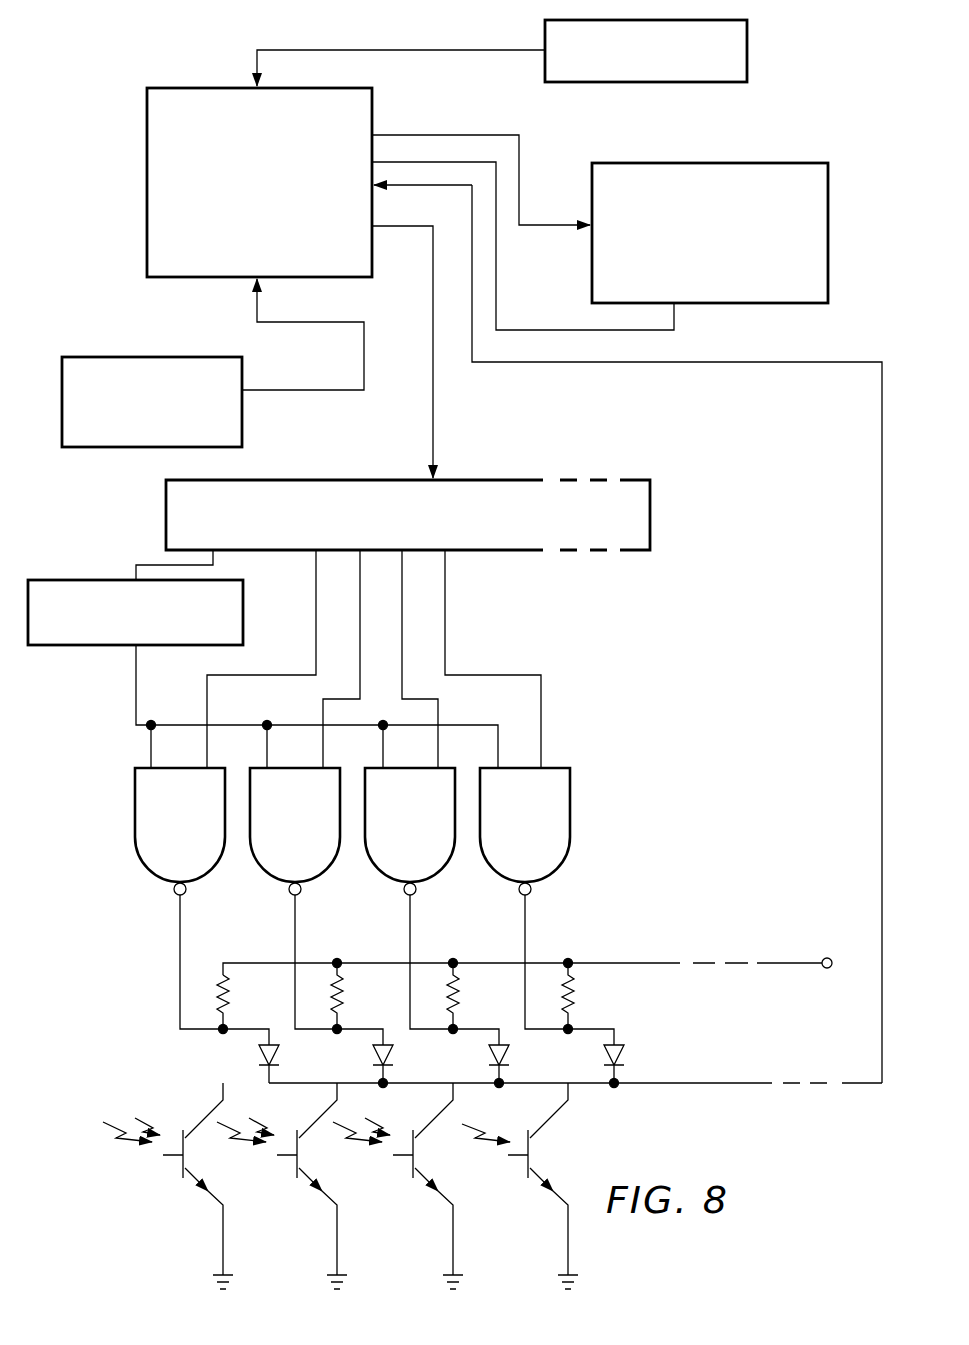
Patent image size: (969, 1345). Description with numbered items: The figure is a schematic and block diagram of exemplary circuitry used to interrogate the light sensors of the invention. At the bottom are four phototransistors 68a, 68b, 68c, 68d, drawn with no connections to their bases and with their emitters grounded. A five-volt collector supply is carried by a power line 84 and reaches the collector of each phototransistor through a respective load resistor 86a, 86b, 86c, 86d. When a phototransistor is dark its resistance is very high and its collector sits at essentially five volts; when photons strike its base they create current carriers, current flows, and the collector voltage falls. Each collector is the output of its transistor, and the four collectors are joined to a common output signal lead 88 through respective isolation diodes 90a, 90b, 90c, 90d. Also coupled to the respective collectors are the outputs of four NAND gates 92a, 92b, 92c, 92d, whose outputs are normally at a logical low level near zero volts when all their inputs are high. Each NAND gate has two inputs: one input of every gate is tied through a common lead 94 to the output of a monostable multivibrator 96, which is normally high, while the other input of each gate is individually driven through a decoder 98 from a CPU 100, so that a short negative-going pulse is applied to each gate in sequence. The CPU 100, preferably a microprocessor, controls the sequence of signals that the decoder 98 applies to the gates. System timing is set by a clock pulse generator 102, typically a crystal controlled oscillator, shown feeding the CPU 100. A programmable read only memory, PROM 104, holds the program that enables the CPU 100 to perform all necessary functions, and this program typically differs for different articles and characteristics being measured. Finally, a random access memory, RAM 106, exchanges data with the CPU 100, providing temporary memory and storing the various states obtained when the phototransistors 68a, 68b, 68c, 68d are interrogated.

The CPU 100 is at (373, 98).
The programmable read only memory (PROM) 104 is at (747, 34).
The random access memory (RAM) 106 is at (778, 163).
The clock pulse generator 102 is at (228, 357).
The decoder 98 is at (483, 478).
The monostable multivibrator 96 is at (233, 580).
The common lead 94 is at (136, 688).
The NAND gate 92a is at (138, 860).
The NAND gate 92b is at (256, 866).
The NAND gate 92c is at (373, 866).
The NAND gate 92d is at (492, 866).
The power line 84 is at (617, 961).
The load resistor 86a is at (229, 1006).
The load resistor 86b is at (343, 1006).
The load resistor 86c is at (459, 1006).
The load resistor 86d is at (574, 1006).
The isolation diode 90a is at (279, 1053).
The isolation diode 90b is at (393, 1053).
The isolation diode 90c is at (509, 1053).
The isolation diode 90d is at (624, 1053).
The output signal lead 88 is at (882, 1018).
The phototransistor 68a is at (181, 1168).
The phototransistor 68b is at (295, 1168).
The phototransistor 68c is at (411, 1168).
The phototransistor 68d is at (526, 1168).